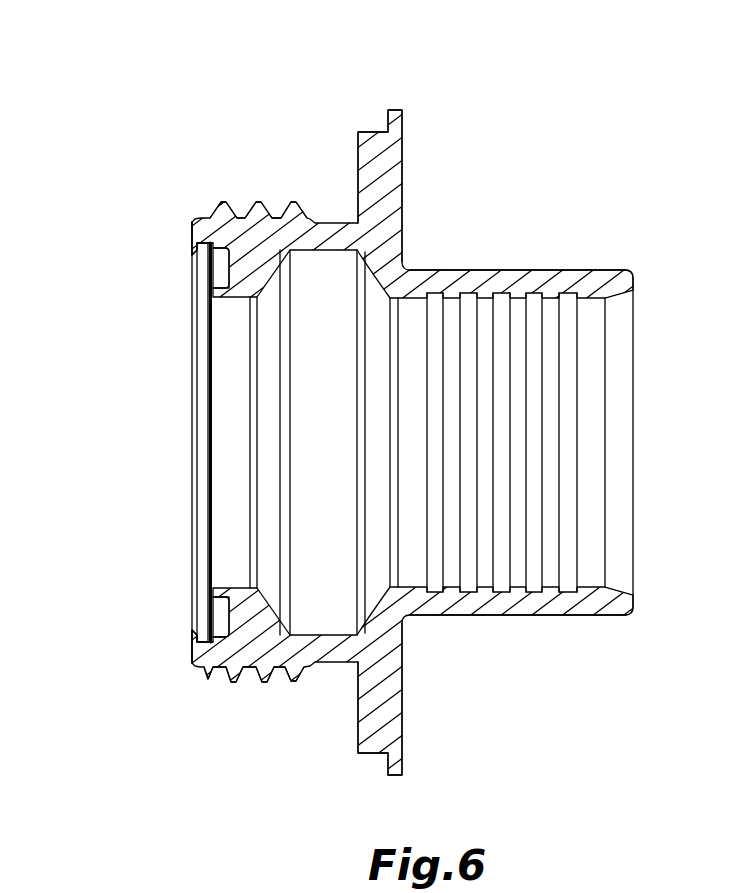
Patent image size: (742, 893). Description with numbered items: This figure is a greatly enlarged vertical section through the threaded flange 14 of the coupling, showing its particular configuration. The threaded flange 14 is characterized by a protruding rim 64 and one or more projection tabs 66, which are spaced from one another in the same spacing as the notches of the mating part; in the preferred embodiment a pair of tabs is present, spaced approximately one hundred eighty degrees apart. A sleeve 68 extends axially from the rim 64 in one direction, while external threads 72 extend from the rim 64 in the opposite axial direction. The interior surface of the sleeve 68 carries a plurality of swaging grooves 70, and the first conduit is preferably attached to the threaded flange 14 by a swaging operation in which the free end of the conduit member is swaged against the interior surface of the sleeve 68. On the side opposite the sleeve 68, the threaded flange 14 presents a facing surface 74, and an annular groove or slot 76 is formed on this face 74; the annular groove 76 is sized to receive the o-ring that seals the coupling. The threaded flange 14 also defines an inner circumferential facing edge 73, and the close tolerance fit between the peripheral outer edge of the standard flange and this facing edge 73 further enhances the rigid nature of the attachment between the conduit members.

The threaded flange 14 is at (520, 150).
The protruding rim 64 is at (367, 131).
The projection tabs 66 is at (402, 112).
The sleeve 68 is at (487, 271).
The swaging grooves 70 is at (532, 345).
The external threads 72 is at (252, 200).
The inner circumferential facing edge 73 is at (193, 254).
The facing surface 74 is at (192, 262).
The annular groove 76 is at (218, 268).